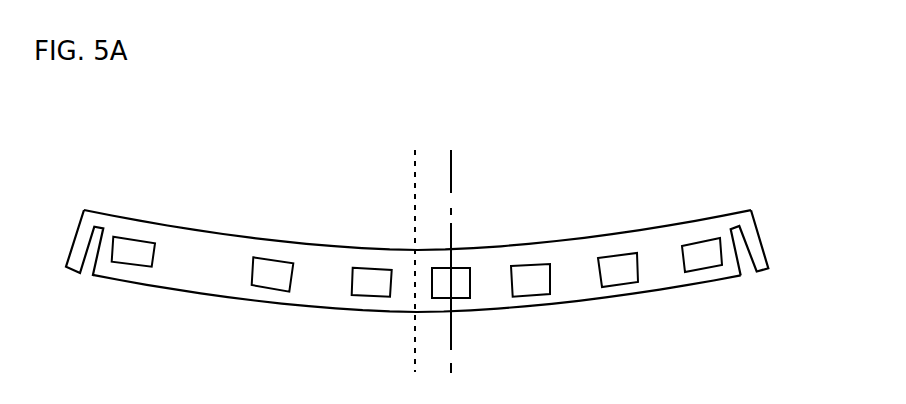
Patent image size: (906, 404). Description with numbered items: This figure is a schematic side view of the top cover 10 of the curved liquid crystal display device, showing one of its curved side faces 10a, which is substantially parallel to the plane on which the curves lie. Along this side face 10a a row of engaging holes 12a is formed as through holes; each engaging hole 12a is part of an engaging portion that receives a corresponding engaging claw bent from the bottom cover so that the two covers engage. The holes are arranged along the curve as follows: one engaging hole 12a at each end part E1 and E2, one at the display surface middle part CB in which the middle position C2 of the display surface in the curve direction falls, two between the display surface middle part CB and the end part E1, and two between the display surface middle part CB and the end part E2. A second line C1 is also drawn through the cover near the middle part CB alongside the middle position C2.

The top cover 10 is at (419, 235).
The side face 10a is at (555, 248).
The engaging hole 12a is at (268, 260).
The display surface middle part CB is at (499, 264).
The center line of pad arrangement C1 is at (417, 342).
The middle position C2 is at (451, 342).
The end part E1 is at (736, 271).
The end part E2 is at (107, 271).